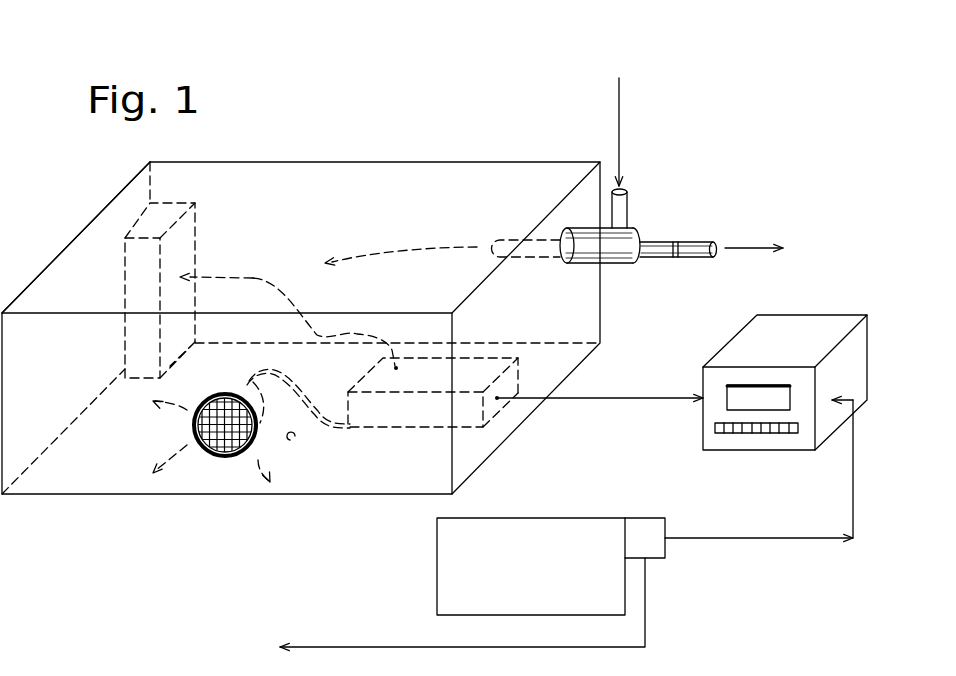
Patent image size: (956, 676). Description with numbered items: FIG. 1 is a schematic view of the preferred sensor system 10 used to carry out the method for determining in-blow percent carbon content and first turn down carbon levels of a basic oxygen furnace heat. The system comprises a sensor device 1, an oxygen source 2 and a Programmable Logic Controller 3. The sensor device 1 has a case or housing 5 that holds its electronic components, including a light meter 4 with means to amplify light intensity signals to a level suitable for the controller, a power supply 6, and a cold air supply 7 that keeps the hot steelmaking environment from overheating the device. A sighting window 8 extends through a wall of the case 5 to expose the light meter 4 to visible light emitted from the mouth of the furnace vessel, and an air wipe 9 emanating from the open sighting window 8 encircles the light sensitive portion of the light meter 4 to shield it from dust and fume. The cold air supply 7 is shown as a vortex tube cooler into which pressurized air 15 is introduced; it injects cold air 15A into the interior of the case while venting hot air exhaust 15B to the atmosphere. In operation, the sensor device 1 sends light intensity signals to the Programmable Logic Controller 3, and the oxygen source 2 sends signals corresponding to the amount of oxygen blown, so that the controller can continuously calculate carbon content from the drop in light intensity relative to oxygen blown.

The sensor device 1 is at (208, 160).
The oxygen source 2 is at (437, 553).
The Programmable Logic Controller 3 is at (767, 448).
The light meter 4 is at (380, 368).
The case or housing 5 is at (118, 208).
The power supply 6 is at (132, 265).
The cold air supply 7 is at (634, 226).
The sighting window 8 is at (210, 456).
The air wipe 9 is at (187, 412).
The sensor system 10 is at (348, 114).
The pressurized air 15 is at (618, 137).
The cold air 15A is at (408, 247).
The hot air exhaust 15B is at (733, 250).